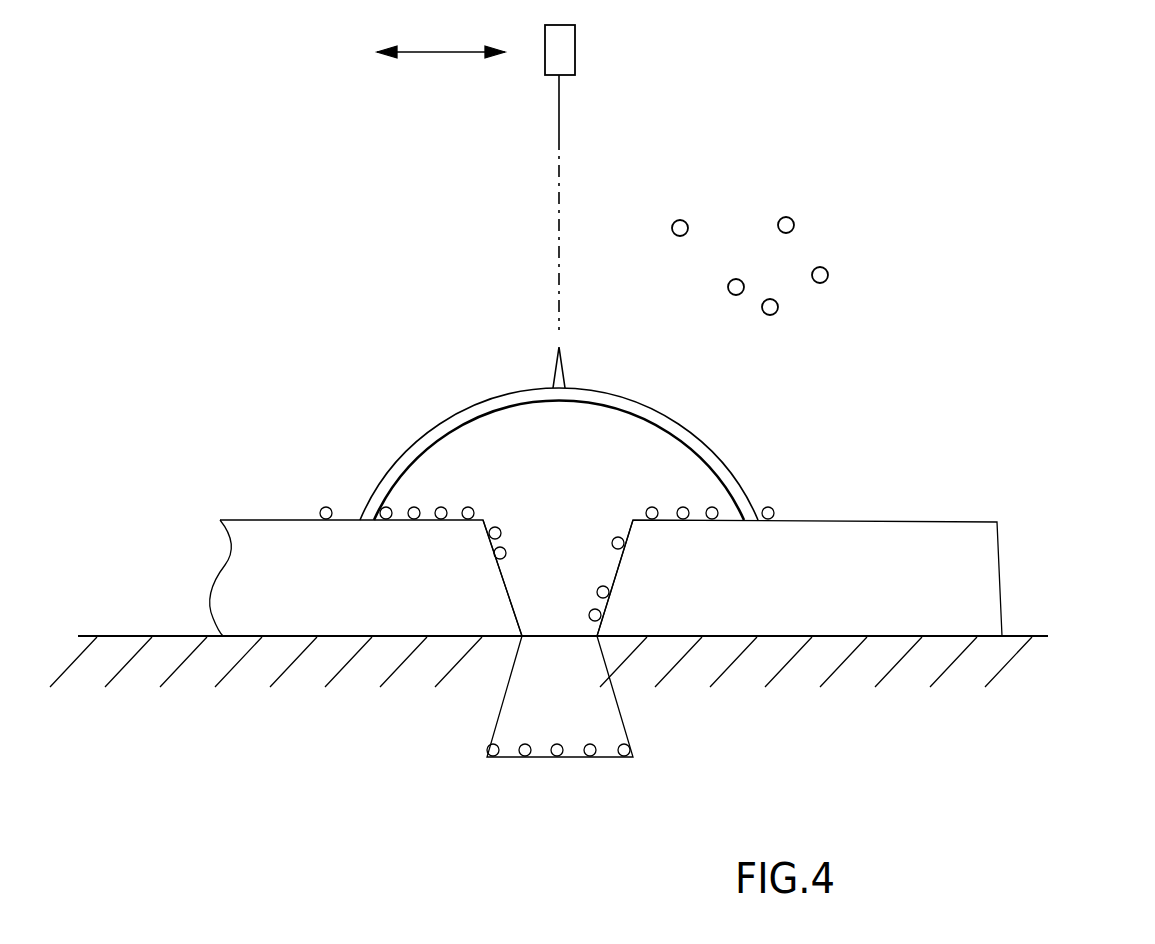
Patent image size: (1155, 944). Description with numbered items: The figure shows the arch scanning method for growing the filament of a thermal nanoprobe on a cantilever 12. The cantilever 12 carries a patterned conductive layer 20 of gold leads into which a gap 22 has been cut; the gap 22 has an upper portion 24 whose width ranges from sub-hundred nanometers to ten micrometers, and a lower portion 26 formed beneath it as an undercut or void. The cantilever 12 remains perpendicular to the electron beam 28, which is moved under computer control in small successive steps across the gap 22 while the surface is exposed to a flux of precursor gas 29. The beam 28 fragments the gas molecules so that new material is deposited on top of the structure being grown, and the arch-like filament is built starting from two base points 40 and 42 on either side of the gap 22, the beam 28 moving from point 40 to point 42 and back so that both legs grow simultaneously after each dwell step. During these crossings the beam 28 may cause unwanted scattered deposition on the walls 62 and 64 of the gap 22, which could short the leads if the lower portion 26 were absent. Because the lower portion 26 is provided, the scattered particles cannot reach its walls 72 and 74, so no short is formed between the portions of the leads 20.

The cantilever 12 is at (893, 675).
The patterned conductive layer 20 is at (257, 575).
The gap 22 is at (532, 605).
The upper portion of gap 24 is at (570, 577).
The lower portion of gap 26 is at (560, 713).
The electron beam 28 is at (559, 172).
The precursor gas 29 is at (828, 270).
The base point 40 is at (365, 520).
The base point 42 is at (752, 520).
The wall of gap 62 is at (483, 520).
The wall of gap 64 is at (613, 565).
The wall of undercut portion 72 is at (495, 713).
The wall of undercut portion 74 is at (627, 713).